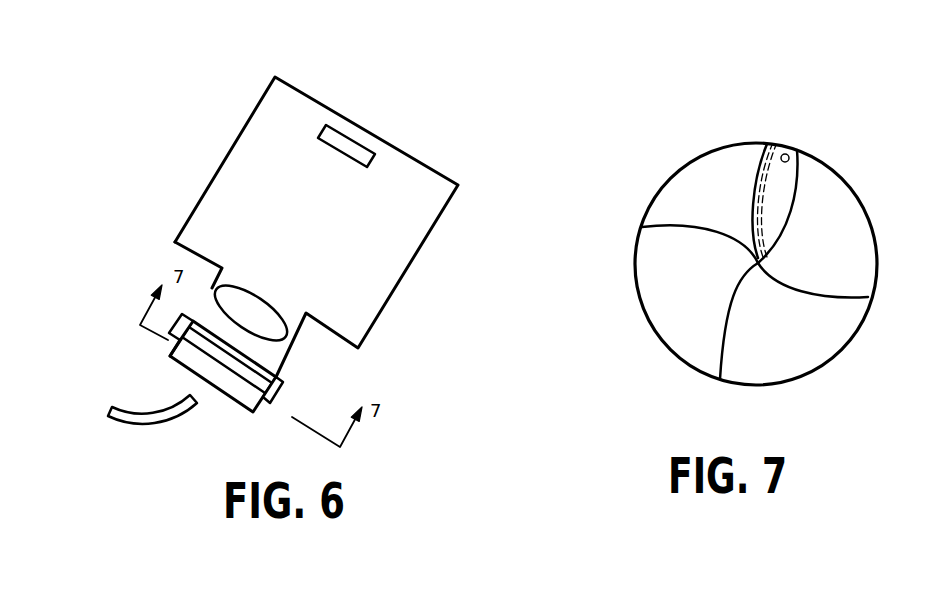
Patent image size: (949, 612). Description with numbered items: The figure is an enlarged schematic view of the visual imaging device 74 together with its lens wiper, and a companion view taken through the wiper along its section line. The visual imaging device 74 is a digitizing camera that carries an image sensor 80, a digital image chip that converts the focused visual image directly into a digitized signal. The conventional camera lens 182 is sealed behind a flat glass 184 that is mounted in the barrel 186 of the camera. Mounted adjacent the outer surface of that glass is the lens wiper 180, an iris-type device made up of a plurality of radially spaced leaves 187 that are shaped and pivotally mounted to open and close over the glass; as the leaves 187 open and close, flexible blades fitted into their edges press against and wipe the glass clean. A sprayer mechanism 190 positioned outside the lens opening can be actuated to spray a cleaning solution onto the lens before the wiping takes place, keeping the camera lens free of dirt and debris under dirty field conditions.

In FIG. 6, the visual imaging device 74 is at (398, 202).
In FIG. 6, the image sensor 80 is at (357, 147).
In FIG. 6, the lens wiper 180 is at (262, 382).
In FIG. 7, the lens wiper 180 is at (874, 226).
In FIG. 6, the camera lens 182 is at (275, 320).
In FIG. 6, the flat glass 184 is at (255, 358).
In FIG. 6, the barrel 186 is at (165, 357).
In FIG. 7, the leaves 187 is at (840, 205).
In FIG. 6, the sprayer mechanism 190 is at (138, 429).